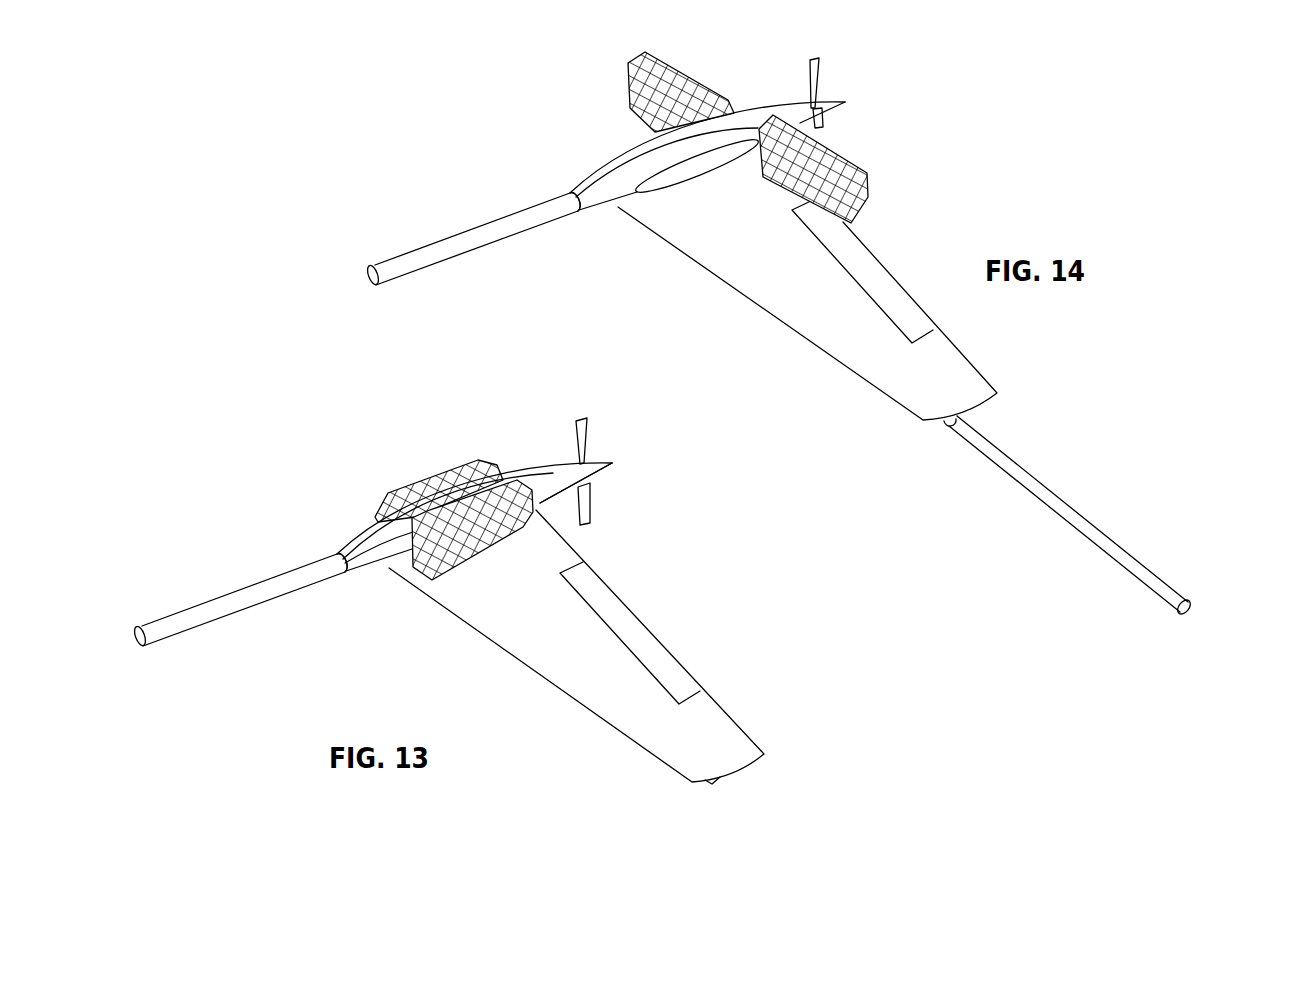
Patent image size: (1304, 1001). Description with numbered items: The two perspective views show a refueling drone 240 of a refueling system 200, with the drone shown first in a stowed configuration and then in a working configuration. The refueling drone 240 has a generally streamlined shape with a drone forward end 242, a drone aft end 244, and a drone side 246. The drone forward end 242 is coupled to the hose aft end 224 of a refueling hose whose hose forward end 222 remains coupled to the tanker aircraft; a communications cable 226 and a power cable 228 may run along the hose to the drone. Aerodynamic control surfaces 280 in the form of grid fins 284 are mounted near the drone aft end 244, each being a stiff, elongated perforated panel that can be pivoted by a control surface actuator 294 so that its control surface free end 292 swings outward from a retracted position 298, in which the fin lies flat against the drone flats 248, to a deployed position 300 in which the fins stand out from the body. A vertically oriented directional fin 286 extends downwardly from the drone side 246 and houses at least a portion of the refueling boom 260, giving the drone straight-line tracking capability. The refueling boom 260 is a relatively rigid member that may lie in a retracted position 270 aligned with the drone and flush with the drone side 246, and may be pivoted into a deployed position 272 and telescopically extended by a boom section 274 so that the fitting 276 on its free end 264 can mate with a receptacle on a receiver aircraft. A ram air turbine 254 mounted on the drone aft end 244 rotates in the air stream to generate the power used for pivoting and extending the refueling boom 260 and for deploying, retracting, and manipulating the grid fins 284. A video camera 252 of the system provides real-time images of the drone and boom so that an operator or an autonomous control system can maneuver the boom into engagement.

In FIG. 14, the refueling system 200 is at (390, 258).
In FIG. 13, the refueling system 200 is at (168, 614).
In FIG. 14, the hose forward end 222 is at (404, 278).
In FIG. 13, the hose forward end 222 is at (170, 638).
In FIG. 14, the hose aft end 224 is at (558, 194).
In FIG. 13, the hose aft end 224 is at (330, 557).
In FIG. 14, the communications cable 226 is at (452, 254).
In FIG. 13, the communications cable 226 is at (210, 620).
In FIG. 14, the power cable 228 is at (435, 243).
In FIG. 13, the power cable 228 is at (202, 604).
In FIG. 14, the refueling drone 240 is at (612, 174).
In FIG. 13, the refueling drone 240 is at (373, 543).
In FIG. 14, the drone forward end 242 is at (573, 189).
In FIG. 13, the drone forward end 242 is at (350, 543).
In FIG. 14, the drone aft end 244 is at (846, 102).
In FIG. 13, the drone aft end 244 is at (614, 463).
In FIG. 14, the drone side 246 is at (763, 108).
In FIG. 13, the drone side 246 is at (550, 462).
In FIG. 14, the drone flats 248 is at (649, 188).
In FIG. 13, the drone flats 248 is at (410, 548).
In FIG. 14, the video camera 252 is at (585, 212).
In FIG. 13, the video camera 252 is at (348, 573).
In FIG. 14, the ram air turbine 254 is at (821, 73).
In FIG. 13, the ram air turbine 254 is at (588, 436).
In FIG. 14, the refueling boom 260 is at (872, 374).
In FIG. 13, the refueling boom 260 is at (612, 723).
In FIG. 14, the free end 264 is at (1167, 608).
In FIG. 13, the retracted position 270 is at (710, 783).
In FIG. 14, the deployed position 272 is at (1023, 488).
In FIG. 14, the boom section 274 is at (1098, 520).
In FIG. 14, the fitting 276 is at (1189, 600).
In FIG. 14, the control surfaces 280 is at (665, 55).
In FIG. 13, the control surfaces 280 is at (418, 475).
In FIG. 14, the grid fins 284 is at (631, 62).
In FIG. 13, the grid fins 284 is at (447, 468).
In FIG. 14, the directional fin 286 is at (802, 338).
In FIG. 13, the directional fin 286 is at (543, 678).
In FIG. 14, the control surface free end 292 is at (869, 183).
In FIG. 14, the control surface actuator 294 is at (741, 106).
In FIG. 13, the control surface actuator 294 is at (543, 505).
In FIG. 14, the retracted position 298 is at (866, 210).
In FIG. 13, the retracted position 298 is at (443, 347).
In FIG. 14, the deployed position 300 is at (859, 156).